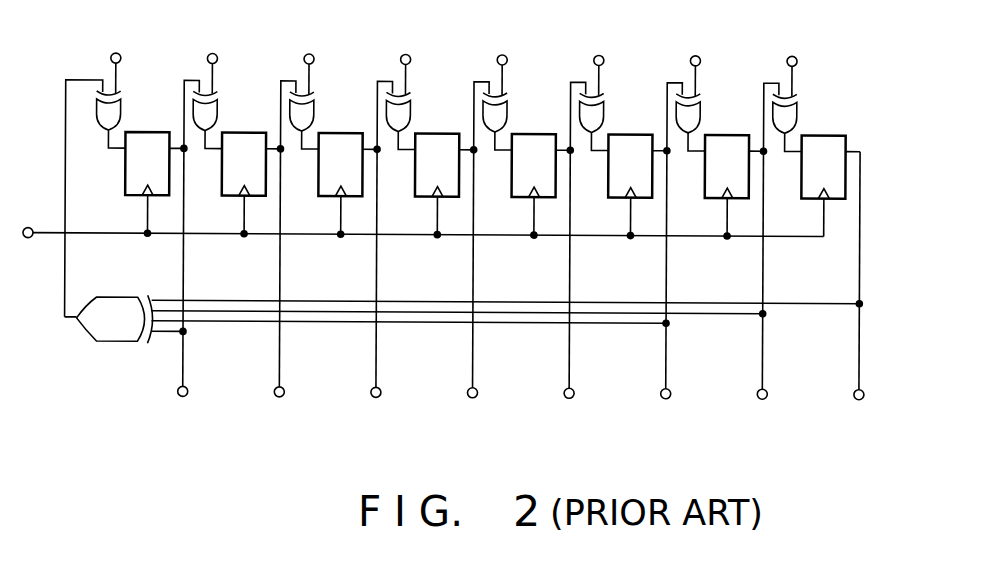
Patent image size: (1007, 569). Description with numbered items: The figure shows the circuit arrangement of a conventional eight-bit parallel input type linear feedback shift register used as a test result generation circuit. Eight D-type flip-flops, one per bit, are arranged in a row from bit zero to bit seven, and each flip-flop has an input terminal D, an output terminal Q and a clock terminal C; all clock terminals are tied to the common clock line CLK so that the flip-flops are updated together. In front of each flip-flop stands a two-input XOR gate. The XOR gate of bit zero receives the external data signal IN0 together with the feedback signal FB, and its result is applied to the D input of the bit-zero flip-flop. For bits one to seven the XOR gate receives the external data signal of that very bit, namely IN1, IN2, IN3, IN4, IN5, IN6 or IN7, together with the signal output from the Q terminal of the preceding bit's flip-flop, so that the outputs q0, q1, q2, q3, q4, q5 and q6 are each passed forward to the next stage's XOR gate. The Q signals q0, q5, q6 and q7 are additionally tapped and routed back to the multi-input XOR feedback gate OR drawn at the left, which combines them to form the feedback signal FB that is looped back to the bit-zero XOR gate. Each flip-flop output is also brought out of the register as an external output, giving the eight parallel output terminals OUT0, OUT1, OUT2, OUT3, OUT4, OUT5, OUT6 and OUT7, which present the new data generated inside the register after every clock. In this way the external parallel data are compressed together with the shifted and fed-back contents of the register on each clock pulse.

The clock input CLK is at (419, 220).
The multi-input OR gate OR is at (463, 321).
The external data signal of bit 0 IN0 is at (122, 58).
The external data signal IN1 is at (218, 58).
The external data signal IN2 is at (315, 59).
The external data signal IN3 is at (411, 59).
The external data signal IN4 is at (508, 60).
The external data signal IN5 is at (605, 60).
The external data signal IN6 is at (701, 61).
The external data signal IN7 is at (798, 61).
The output signal of the F/F of bit 0 q0 is at (174, 98).
The output signal of the F/F of bit 1 q1 is at (271, 98).
The output signal of the F/F of bit 2 q2 is at (367, 98).
The output signal of the F/F of bit 3 q3 is at (464, 98).
The output signal of the F/F of bit 4 q4 is at (560, 98).
The output signal of the F/F of bit 5 q5 is at (657, 98).
The output signal of the F/F of bit 6 q6 is at (754, 98).
The output signal of the F/F of bit 7 q7 is at (868, 168).
The output 0 OUT0 is at (185, 288).
The output 1 OUT1 is at (282, 289).
The output 2 OUT2 is at (378, 289).
The output 3 OUT3 is at (475, 290).
The output 4 OUT4 is at (571, 290).
The output 5 OUT5 is at (668, 291).
The output 6 OUT6 is at (765, 291).
The output 7 OUT7 is at (861, 292).